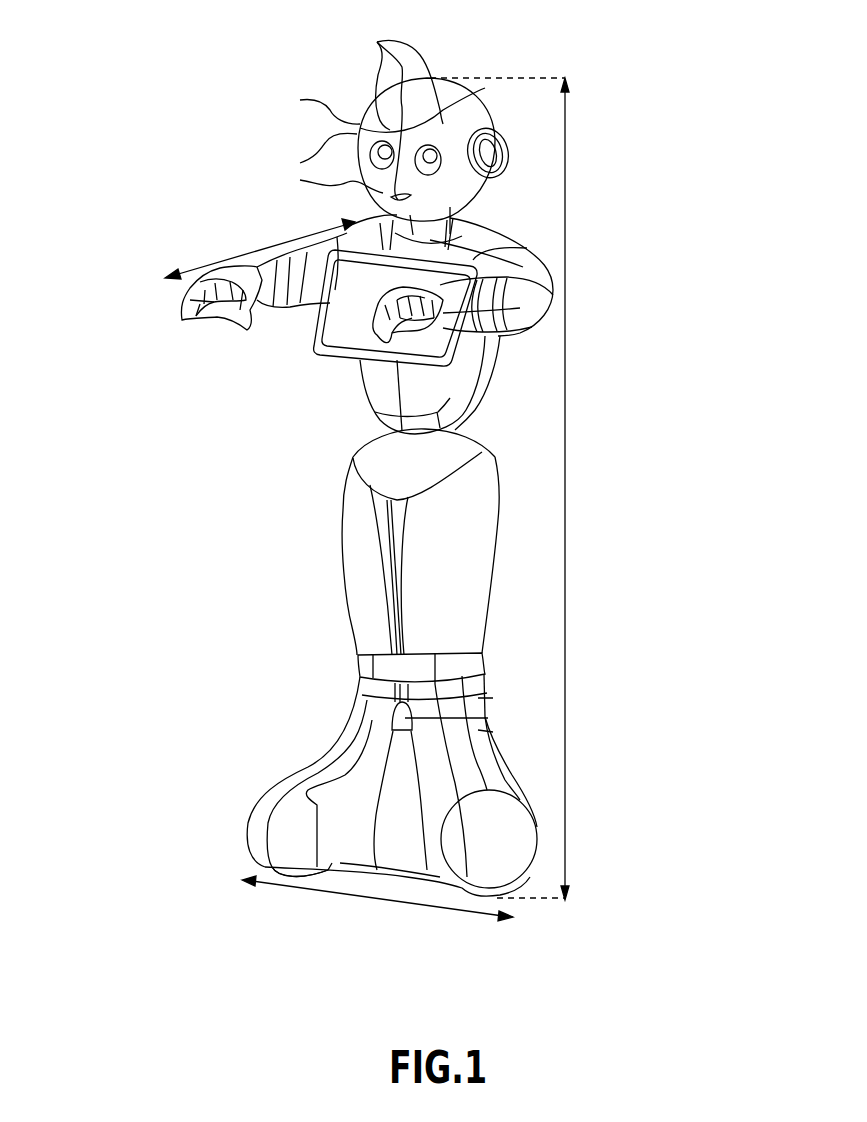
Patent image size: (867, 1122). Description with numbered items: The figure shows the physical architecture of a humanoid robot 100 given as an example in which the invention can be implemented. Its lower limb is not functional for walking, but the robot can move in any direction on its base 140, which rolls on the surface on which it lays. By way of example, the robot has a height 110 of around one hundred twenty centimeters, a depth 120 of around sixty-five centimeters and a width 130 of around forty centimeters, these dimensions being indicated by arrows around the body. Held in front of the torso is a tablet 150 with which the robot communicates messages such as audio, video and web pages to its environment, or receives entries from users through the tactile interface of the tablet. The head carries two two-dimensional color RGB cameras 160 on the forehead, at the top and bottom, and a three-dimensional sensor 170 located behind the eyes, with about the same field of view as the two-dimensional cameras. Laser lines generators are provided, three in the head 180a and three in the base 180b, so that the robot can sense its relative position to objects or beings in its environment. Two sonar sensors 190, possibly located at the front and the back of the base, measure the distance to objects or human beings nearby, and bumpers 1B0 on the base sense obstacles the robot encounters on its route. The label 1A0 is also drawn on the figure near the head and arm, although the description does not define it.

The robot 100 is at (257, 552).
The height 110 is at (565, 452).
The depth 120 is at (242, 255).
The width 130 is at (353, 897).
The base 140 is at (210, 820).
The tablet 150 is at (313, 356).
The 2D color RGB cameras 160 is at (378, 193).
The 3D sensor 170 is at (359, 122).
The laser lines generators in the head 180a is at (377, 75).
The laser lines generators in the base 180b is at (487, 732).
The sonar sensors 190 is at (383, 767).
The arm and hand 1A0 is at (430, 313).
The bumpers 1B0 is at (443, 833).